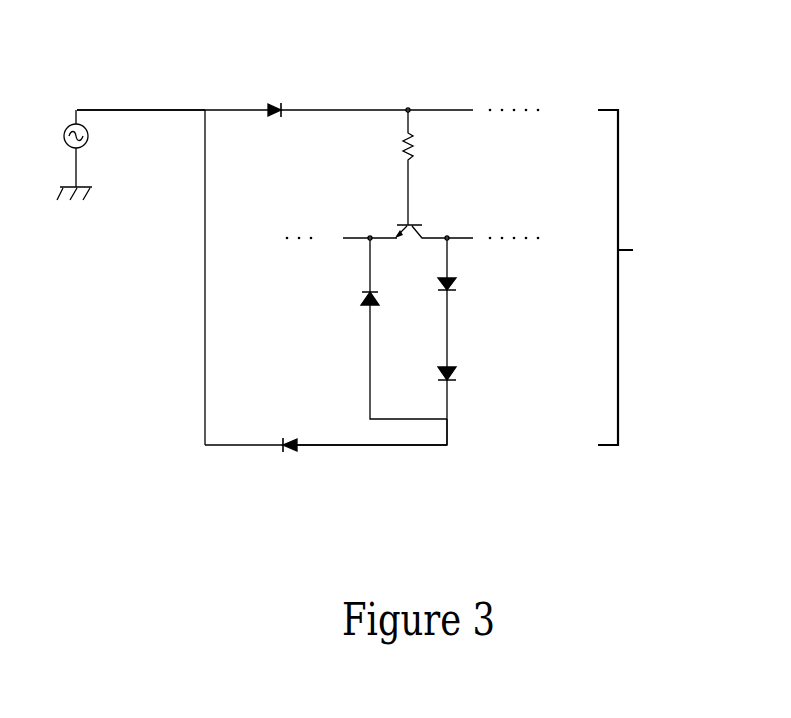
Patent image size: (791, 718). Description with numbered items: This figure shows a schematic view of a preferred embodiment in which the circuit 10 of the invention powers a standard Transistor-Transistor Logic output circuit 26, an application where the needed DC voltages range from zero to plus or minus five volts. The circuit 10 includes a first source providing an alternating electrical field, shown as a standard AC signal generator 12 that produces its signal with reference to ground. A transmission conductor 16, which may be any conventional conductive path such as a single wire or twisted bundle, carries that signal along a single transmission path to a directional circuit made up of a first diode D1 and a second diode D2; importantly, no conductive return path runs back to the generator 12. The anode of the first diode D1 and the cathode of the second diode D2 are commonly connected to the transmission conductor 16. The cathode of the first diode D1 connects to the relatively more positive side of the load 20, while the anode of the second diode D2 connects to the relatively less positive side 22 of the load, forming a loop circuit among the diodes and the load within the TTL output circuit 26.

The circuit 10 is at (165, 335).
The generator 12 is at (77, 110).
The transmission conductor 16 is at (140, 110).
The load 20 is at (412, 128).
The relatively less positive side of the load 22 is at (448, 438).
The TTL output circuit 26 is at (501, 277).
The first diode D1 is at (283, 97).
The second diode D2 is at (288, 430).